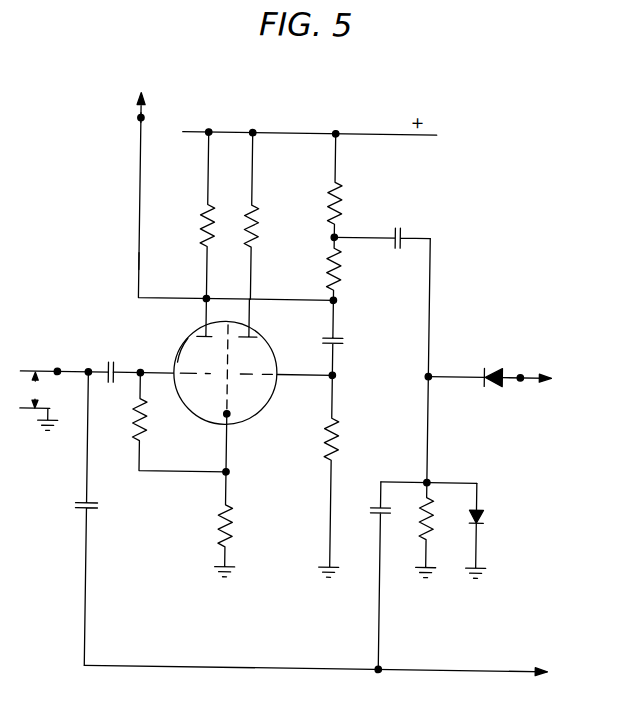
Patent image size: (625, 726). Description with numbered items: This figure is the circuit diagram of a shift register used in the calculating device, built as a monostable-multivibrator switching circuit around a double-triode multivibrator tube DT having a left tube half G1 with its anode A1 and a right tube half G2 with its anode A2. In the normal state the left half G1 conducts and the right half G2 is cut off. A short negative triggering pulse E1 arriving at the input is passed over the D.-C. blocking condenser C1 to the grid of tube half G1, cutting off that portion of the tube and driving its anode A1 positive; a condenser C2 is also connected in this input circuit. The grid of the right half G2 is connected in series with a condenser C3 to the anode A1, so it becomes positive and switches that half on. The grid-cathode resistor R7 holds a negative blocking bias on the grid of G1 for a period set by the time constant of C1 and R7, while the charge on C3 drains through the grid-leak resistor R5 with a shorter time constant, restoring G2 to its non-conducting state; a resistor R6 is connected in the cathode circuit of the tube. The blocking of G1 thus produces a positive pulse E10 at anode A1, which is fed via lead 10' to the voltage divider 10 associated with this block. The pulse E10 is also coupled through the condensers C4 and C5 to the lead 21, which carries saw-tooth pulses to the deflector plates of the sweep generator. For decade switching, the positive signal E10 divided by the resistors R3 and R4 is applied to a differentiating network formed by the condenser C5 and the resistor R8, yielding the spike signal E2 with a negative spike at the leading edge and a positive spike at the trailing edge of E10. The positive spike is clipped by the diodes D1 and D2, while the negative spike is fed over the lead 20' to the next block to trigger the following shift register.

The voltage divider 10 is at (141, 95).
The positive pulse E10 is at (136, 115).
The lead 10' is at (119, 262).
The resistor R3 is at (337, 196).
The resistor R4 is at (339, 280).
The condenser C5 is at (400, 232).
The anode A1 is at (203, 336).
The anode A2 is at (252, 336).
The left tube half G1 is at (184, 348).
The right tube half G2 is at (277, 366).
The double-triode multivibrator tube DT is at (249, 420).
The D.-C. blocking condenser C1 is at (108, 364).
The negative pulse E1 is at (39, 401).
The grid-cathode resistor R7 is at (144, 426).
The resistor R6 is at (236, 529).
The condenser C2 is at (93, 514).
The condenser C3 is at (344, 338).
The grid-leak resistor R5 is at (337, 430).
The diode D1 is at (492, 390).
The differentiated spike signal E2 is at (530, 384).
The lead 20' is at (526, 360).
The condenser C4 is at (376, 515).
The resistor R8 is at (432, 530).
The diode D2 is at (488, 516).
The lead 21 is at (470, 672).